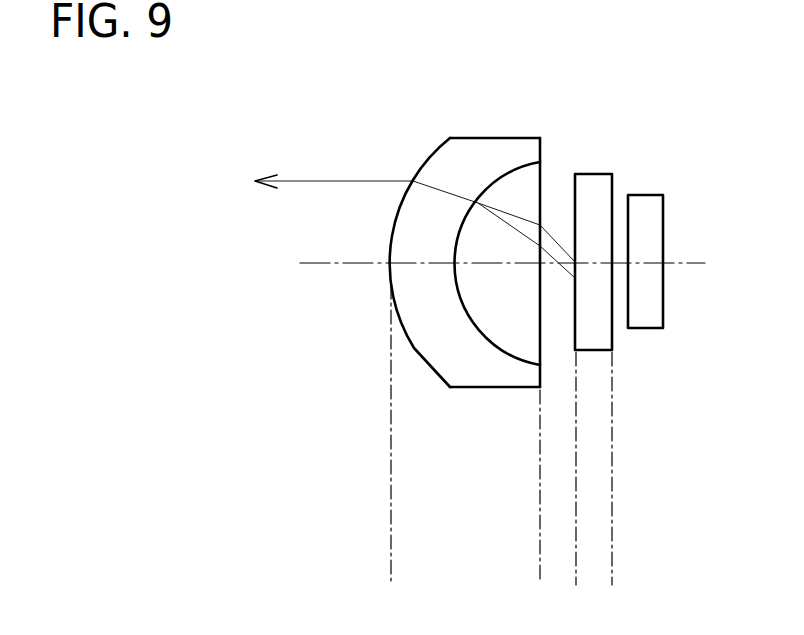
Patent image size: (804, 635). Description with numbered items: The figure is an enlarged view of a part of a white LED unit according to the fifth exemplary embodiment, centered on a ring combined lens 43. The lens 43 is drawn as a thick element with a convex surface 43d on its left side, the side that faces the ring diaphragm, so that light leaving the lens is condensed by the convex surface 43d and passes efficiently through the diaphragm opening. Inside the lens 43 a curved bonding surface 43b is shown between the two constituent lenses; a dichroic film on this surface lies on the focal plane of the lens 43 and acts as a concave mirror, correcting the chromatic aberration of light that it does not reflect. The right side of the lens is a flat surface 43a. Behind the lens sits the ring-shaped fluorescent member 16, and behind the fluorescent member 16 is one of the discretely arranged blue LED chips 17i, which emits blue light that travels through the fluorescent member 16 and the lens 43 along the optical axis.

The ring combined lens 43 is at (483, 240).
The flat exit surface of lens 43a is at (540, 346).
The concave inner surface of lens 43b is at (513, 353).
The convex surface 43d is at (417, 345).
The fluorescent member 16 is at (599, 177).
The blue LED chip 17i is at (647, 207).